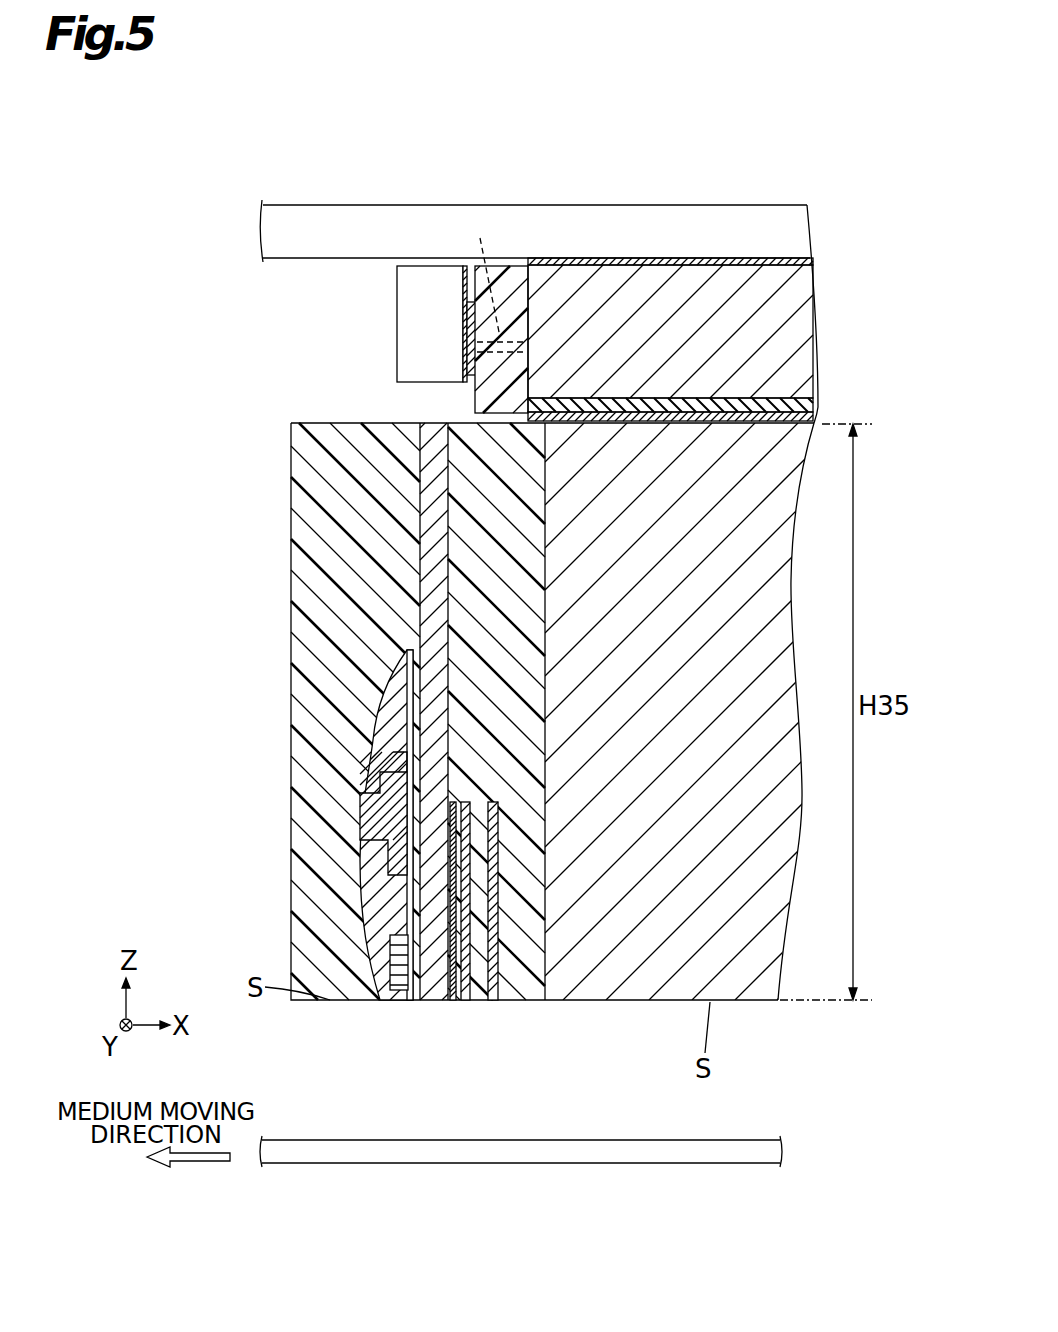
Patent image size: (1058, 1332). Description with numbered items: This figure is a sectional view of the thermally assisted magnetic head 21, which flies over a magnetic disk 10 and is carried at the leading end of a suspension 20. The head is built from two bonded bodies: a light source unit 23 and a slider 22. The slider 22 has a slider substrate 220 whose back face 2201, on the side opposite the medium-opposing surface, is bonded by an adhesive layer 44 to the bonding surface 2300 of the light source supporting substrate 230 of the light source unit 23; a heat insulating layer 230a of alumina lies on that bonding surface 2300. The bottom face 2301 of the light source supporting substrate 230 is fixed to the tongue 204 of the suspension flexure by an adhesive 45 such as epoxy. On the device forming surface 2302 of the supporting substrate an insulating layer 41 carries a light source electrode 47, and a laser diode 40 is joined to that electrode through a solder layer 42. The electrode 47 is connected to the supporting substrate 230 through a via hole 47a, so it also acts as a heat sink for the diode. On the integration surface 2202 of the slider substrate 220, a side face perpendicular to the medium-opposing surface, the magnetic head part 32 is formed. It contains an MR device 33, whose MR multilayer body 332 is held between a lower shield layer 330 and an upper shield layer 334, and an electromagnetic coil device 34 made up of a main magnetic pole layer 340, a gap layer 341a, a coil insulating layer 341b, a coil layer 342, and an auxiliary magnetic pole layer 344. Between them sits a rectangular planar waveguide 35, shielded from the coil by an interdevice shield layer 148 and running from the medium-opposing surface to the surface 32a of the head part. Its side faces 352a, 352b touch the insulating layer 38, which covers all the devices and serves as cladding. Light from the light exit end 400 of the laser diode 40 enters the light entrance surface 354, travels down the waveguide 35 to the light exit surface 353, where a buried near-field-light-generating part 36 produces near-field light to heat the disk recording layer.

The magnetic disk 10 is at (710, 1166).
The suspension 20 is at (309, 203).
The tongue 204 is at (358, 203).
The thermally assisted magnetic head 21 is at (228, 172).
The slider 22 is at (265, 922).
The light source unit 23 is at (275, 281).
The magnetic head part 32 is at (268, 425).
The surface of the magnetic head part 32a is at (315, 422).
The MR device 33 is at (553, 1060).
The electromagnetic coil device 34 is at (283, 1012).
The waveguide 35 is at (415, 680).
The near-field-light-generating part 36 is at (420, 1000).
The insulating layer 38 is at (313, 660).
The laser diode 40 is at (397, 340).
The insulating layer 41 is at (526, 262).
The solder layer 42 is at (463, 268).
The adhesive layer 44 is at (777, 400).
The adhesive 45 is at (613, 258).
The light source electrode 47 is at (467, 320).
The via hole 47a is at (491, 280).
The interdevice shield layer 148 is at (455, 1000).
The slider substrate 220 is at (625, 1002).
The back face 2201 is at (800, 412).
The integration surface 2202 is at (545, 610).
The light source supporting substrate 230 is at (745, 275).
The heat insulating layer 230a is at (572, 400).
The bonding surface 2300 is at (668, 414).
The bottom face 2301 is at (686, 261).
The device forming surface 2302 is at (527, 268).
The lower shield layer 330 is at (480, 1000).
The MR multilayer body 332 is at (473, 1000).
The upper shield layer 334 is at (493, 1000).
The main magnetic pole layer 340 is at (403, 1000).
The gap layer 341a is at (413, 697).
The coil insulating layer 341b is at (383, 715).
The coil layer 342 is at (393, 760).
The auxiliary magnetic pole layer 344 is at (383, 1000).
The side face 352a is at (425, 455).
The side face 352b is at (445, 479).
The light exit surface 353 is at (408, 1000).
The light entrance surface 354 is at (427, 422).
The light exit end 400 is at (433, 387).